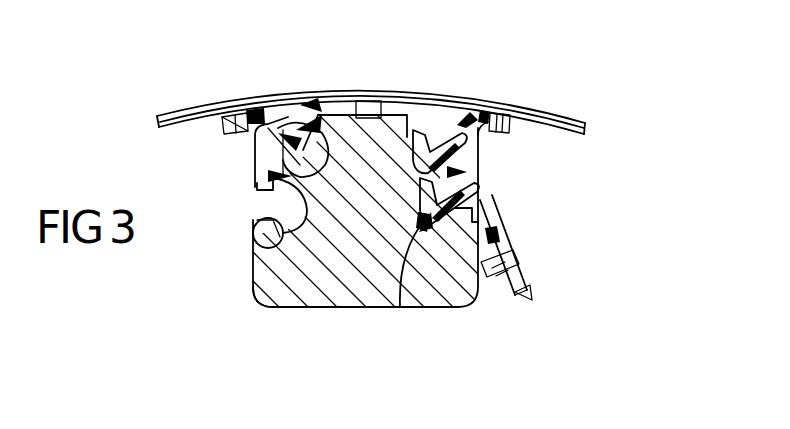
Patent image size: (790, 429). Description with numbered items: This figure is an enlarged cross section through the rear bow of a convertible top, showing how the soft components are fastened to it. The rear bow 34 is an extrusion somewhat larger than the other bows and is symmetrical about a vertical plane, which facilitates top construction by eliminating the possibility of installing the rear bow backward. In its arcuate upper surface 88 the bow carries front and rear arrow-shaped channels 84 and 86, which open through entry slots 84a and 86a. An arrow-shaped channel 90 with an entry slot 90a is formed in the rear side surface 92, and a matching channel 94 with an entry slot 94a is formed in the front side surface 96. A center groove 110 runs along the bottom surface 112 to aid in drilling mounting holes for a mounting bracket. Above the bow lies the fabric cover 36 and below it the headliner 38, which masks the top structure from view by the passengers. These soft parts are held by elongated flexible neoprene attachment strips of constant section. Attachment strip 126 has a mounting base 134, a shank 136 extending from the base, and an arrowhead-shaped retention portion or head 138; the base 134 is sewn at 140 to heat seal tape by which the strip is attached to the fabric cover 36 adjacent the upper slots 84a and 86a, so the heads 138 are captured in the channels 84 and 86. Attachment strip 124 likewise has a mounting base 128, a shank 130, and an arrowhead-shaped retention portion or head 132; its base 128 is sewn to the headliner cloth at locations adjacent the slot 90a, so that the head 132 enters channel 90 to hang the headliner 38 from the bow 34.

The #4 bow 34 is at (262, 316).
The fabric cover 36 is at (174, 117).
The headliner 38 is at (527, 285).
The front arrow-shaped channel 84 is at (250, 189).
The entry slot 84a is at (287, 133).
The rear arrow-shaped channel 86 is at (487, 188).
The entry slot 86a is at (447, 133).
The arcuate upper surface 88 is at (380, 110).
The arrow-shaped channel 90 is at (400, 308).
The entry slot 90a is at (487, 203).
The rear side surface 92 is at (487, 290).
The channel 94 is at (262, 206).
The entry slot 94a is at (265, 259).
The front side surface 96 is at (253, 278).
The center groove 110 is at (365, 310).
The bottom surface 112 is at (296, 310).
The attachment strip 124 is at (490, 120).
The attachment strip 126 is at (350, 112).
The mounting base 128 is at (477, 127).
The shank 130 is at (420, 127).
The retention portion or head 132 is at (480, 143).
The mounting base 134 is at (250, 107).
The shank 136 is at (290, 157).
The retention portion or head 138 is at (257, 183).
The sewing 140 is at (480, 127).